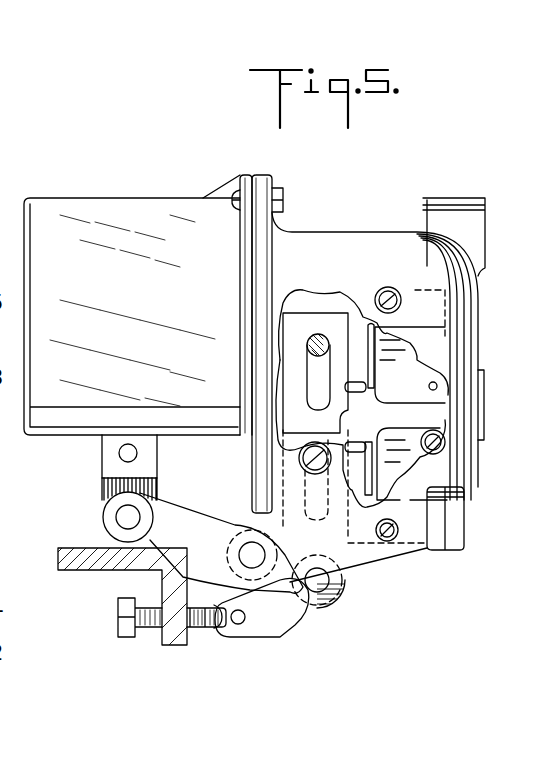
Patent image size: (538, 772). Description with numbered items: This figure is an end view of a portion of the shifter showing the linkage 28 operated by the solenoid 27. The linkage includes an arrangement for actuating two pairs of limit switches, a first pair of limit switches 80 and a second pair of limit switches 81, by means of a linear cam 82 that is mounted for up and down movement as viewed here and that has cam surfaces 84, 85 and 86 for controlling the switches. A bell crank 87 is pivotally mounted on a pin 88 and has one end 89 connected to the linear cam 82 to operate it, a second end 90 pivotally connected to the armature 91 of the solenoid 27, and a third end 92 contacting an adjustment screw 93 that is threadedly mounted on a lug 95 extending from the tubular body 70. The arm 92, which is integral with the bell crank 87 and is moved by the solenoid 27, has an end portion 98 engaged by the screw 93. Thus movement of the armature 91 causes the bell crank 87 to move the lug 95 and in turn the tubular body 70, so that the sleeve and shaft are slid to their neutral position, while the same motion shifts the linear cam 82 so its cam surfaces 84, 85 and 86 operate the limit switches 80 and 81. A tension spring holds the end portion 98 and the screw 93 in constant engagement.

The solenoid 27 is at (164, 309).
The linkage 28 is at (177, 666).
The tubular body 70 is at (58, 556).
The limit switches 80 is at (415, 368).
The limit switches 81 is at (458, 540).
The linear cam 82 is at (310, 320).
The cam surface 84 is at (377, 305).
The cam surface 85 is at (349, 433).
The cam surface 86 is at (374, 527).
The bell crank 87 is at (205, 527).
The pin 88 is at (251, 548).
The end of bell crank 89 is at (335, 600).
The second end of bell crank 90 is at (122, 517).
The armature 91 is at (108, 490).
The third end of bell crank 92 is at (258, 620).
The adjustment screw 93 is at (198, 628).
The lug 95 is at (167, 645).
The end portion 98 is at (217, 611).